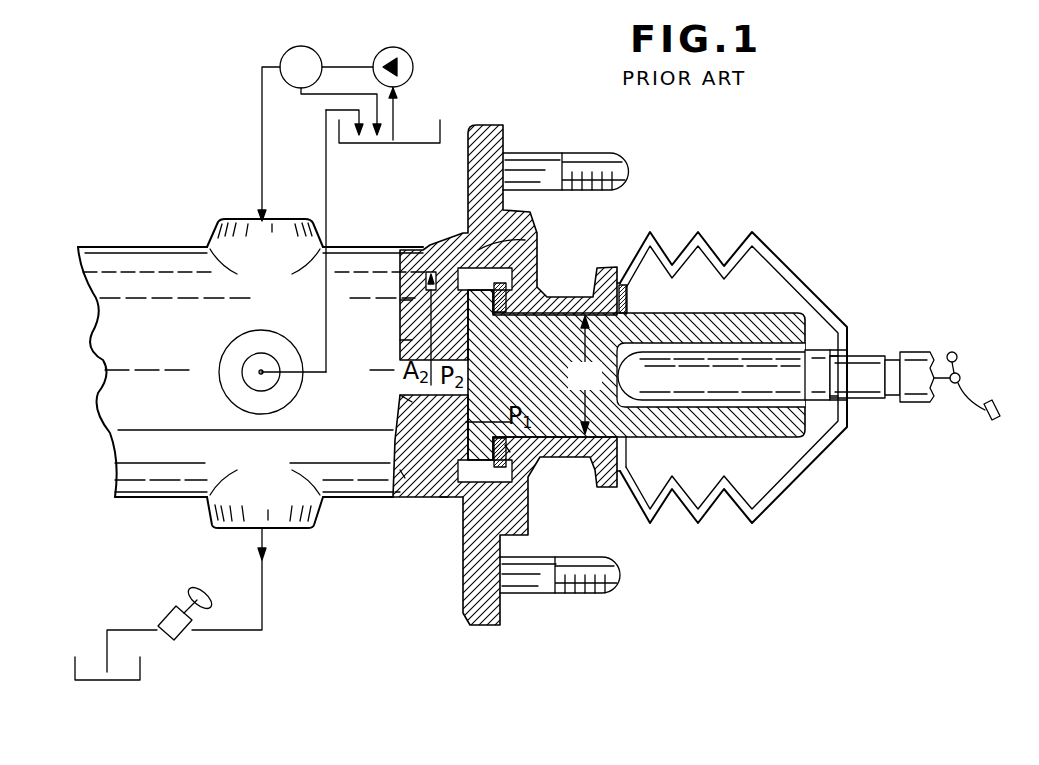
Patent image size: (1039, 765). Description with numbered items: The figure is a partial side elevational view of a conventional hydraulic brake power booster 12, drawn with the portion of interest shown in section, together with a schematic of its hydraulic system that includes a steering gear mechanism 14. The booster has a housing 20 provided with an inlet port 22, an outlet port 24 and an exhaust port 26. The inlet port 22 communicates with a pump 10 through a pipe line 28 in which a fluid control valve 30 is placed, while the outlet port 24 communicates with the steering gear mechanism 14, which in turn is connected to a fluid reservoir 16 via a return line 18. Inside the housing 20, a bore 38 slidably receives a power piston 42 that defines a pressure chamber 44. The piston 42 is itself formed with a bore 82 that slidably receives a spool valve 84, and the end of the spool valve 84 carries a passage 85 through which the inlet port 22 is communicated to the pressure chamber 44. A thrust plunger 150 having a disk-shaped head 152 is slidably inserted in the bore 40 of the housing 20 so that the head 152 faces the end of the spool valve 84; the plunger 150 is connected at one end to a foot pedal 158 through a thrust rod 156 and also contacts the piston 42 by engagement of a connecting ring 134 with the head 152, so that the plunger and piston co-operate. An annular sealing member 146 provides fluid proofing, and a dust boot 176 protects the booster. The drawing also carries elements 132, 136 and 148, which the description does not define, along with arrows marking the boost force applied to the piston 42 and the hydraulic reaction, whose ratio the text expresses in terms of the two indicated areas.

The pump 10 is at (399, 60).
The hydraulic brake power booster 12 is at (506, 128).
The steering gear mechanism 14 is at (178, 643).
The fluid reservoir 16 is at (441, 125).
The return line 18 is at (262, 595).
The housing 20 is at (157, 258).
The inlet port 22 is at (237, 220).
The outlet port 24 is at (283, 513).
The exhaust port 26 is at (233, 387).
The pipe line 28 is at (262, 116).
The fluid control valve 30 is at (304, 58).
The bore 38 is at (438, 262).
The bore 40 is at (587, 293).
The power piston 42 is at (397, 497).
The pressure chamber 44 is at (507, 441).
The bore 82 is at (413, 327).
The spool valve 84 is at (420, 487).
The passage 85 is at (404, 370).
The upper seal 132 is at (533, 228).
The connecting ring 134 is at (503, 287).
The lower seal ring 136 is at (487, 483).
The annular sealing member 146 is at (628, 275).
The boot cavity 148 is at (650, 307).
The thrust plunger 150 is at (738, 445).
The disk-shaped head 152 is at (450, 500).
The thrust rod 156 is at (743, 362).
The foot pedal 158 is at (977, 393).
The dust boot 176 is at (775, 247).